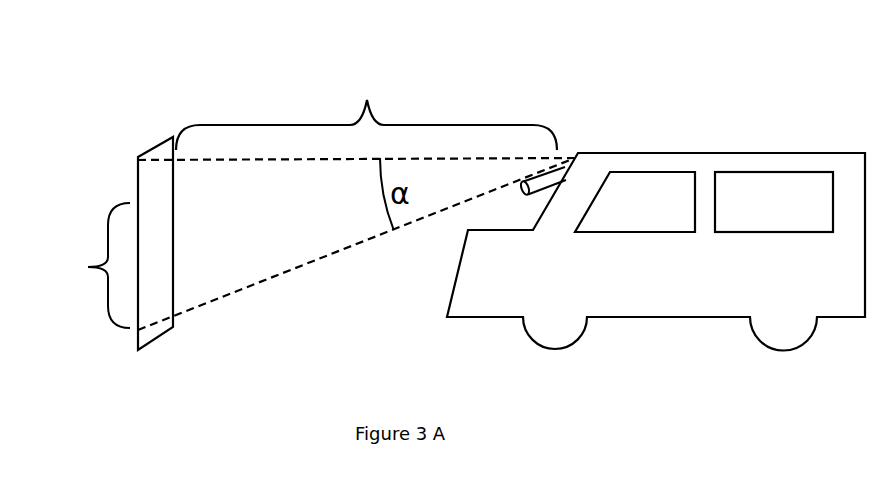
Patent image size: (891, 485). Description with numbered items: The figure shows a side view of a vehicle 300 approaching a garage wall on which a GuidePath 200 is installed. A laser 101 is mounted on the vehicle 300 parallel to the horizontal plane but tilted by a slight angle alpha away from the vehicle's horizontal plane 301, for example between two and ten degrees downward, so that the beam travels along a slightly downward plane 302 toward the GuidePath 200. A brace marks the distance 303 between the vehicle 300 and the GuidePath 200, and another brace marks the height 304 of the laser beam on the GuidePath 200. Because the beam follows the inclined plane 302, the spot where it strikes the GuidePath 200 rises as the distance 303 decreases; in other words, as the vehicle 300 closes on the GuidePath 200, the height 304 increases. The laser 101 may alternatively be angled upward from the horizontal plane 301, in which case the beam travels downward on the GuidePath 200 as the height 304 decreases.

The laser 101 is at (523, 197).
The GuidePath 200 is at (158, 137).
The vehicle 300 is at (656, 252).
The vehicle's horizontal plane 301 is at (356, 146).
The plane 302 is at (356, 244).
The distance 303 is at (366, 113).
The height 304 is at (88, 265).